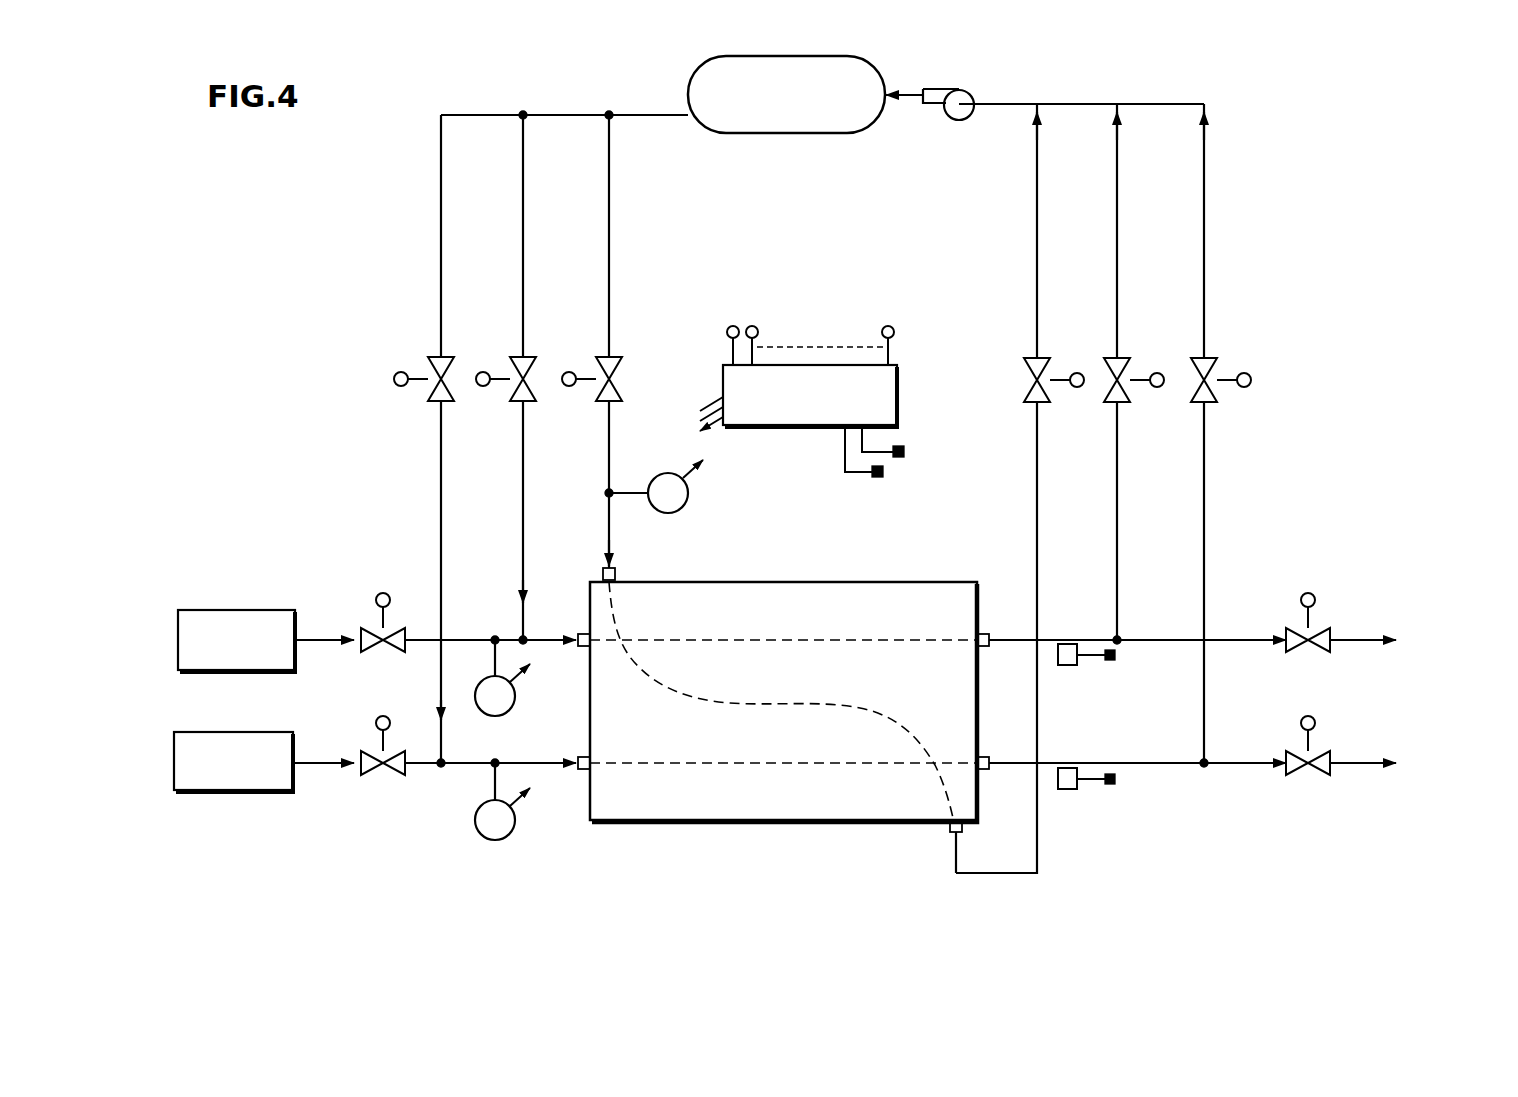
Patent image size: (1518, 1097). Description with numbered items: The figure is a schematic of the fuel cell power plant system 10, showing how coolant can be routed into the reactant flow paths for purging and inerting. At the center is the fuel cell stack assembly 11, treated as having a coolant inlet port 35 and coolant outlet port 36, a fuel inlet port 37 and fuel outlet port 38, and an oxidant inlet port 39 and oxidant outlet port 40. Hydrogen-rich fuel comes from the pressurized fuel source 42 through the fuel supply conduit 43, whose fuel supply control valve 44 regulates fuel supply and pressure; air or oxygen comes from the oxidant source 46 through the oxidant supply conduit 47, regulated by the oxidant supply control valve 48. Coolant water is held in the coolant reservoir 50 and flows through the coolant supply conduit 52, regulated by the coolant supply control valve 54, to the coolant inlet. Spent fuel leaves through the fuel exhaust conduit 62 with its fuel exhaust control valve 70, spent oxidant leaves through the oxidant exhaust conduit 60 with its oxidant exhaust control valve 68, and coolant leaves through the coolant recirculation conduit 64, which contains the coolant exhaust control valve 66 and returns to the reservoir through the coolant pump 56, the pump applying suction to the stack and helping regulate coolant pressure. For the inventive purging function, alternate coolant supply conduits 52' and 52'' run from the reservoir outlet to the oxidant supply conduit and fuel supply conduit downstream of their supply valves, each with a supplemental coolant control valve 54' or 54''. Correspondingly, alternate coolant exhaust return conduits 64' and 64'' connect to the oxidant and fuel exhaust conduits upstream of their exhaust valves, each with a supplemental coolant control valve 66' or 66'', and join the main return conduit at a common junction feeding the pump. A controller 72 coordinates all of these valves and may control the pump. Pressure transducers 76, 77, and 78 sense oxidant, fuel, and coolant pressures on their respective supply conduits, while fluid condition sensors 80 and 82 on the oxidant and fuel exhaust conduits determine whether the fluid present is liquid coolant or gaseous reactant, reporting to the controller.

The fuel cell power plant system 10 is at (964, 399).
The fuel cell stack assembly 11 is at (742, 578).
The coolant inlet port 35 is at (603, 572).
The coolant outlet port 36 is at (948, 830).
The fuel inlet port 37 is at (582, 755).
The fuel outlet port 38 is at (989, 765).
The oxidant inlet port 39 is at (583, 632).
The oxidant outlet port 40 is at (988, 632).
The fuel source 42 is at (230, 730).
The fuel supply conduit 43 is at (455, 762).
The fuel supply control valve 44 is at (370, 747).
The oxidant source 46 is at (230, 608).
The oxidant supply conduit 47 is at (455, 638).
The oxidant supply control valve 48 is at (370, 624).
The coolant reservoir 50 is at (697, 76).
The coolant supply conduit 52 is at (628, 341).
The alternate coolant supply conduit 52' is at (547, 377).
The alternate coolant supply conduit 52'' is at (564, 437).
The coolant supply control valve 54 is at (589, 364).
The supplemental coolant control valve 54' is at (503, 364).
The supplemental coolant control valve 54'' is at (419, 364).
The coolant pump 56 is at (957, 92).
The oxidant exhaust conduit 60 is at (1190, 640).
The fuel exhaust conduit 62 is at (1190, 763).
The coolant recirculation conduit 64 is at (1019, 488).
The alternate coolant exhaust return conduit 64' is at (1144, 372).
The alternate coolant exhaust return conduit 64'' is at (1232, 433).
The coolant exhaust control valve 66 is at (1057, 364).
The supplemental coolant control valve 66' is at (1142, 364).
The supplemental coolant control valve 66'' is at (1230, 364).
The oxidant exhaust control valve 68 is at (1323, 627).
The fuel exhaust control valve 70 is at (1322, 750).
The controller 72 is at (908, 345).
The pressure transducer 76 is at (516, 702).
The pressure transducer 77 is at (516, 827).
The pressure transducer 78 is at (688, 497).
The fluid condition sensor 80 is at (1080, 663).
The fluid condition sensor 82 is at (1080, 788).